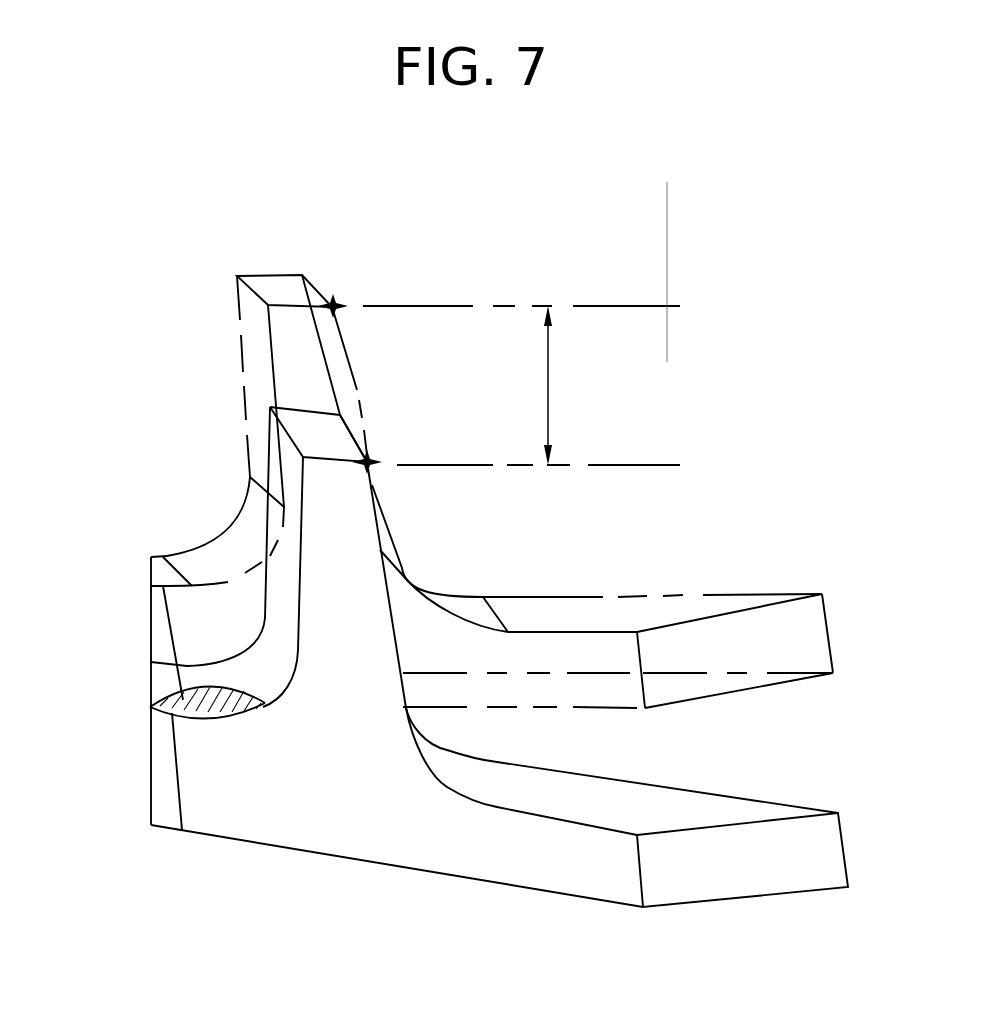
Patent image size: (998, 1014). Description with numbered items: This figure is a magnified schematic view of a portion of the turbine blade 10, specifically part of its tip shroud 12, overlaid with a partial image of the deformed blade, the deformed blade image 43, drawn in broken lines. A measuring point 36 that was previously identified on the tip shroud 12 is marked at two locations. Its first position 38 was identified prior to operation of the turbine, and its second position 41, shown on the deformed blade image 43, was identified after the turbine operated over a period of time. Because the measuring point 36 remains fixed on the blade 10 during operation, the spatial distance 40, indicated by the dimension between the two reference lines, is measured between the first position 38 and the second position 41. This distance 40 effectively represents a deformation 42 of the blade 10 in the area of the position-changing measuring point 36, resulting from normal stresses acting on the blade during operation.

The turbine blade 10 is at (787, 818).
The tip shroud 12 is at (793, 873).
The measuring point 36 is at (333, 300).
The first position 38 is at (370, 467).
The spatial distance 40 is at (607, 305).
The second position 41 is at (332, 304).
The deformation 42 is at (665, 305).
The deformed blade image 43 is at (257, 373).